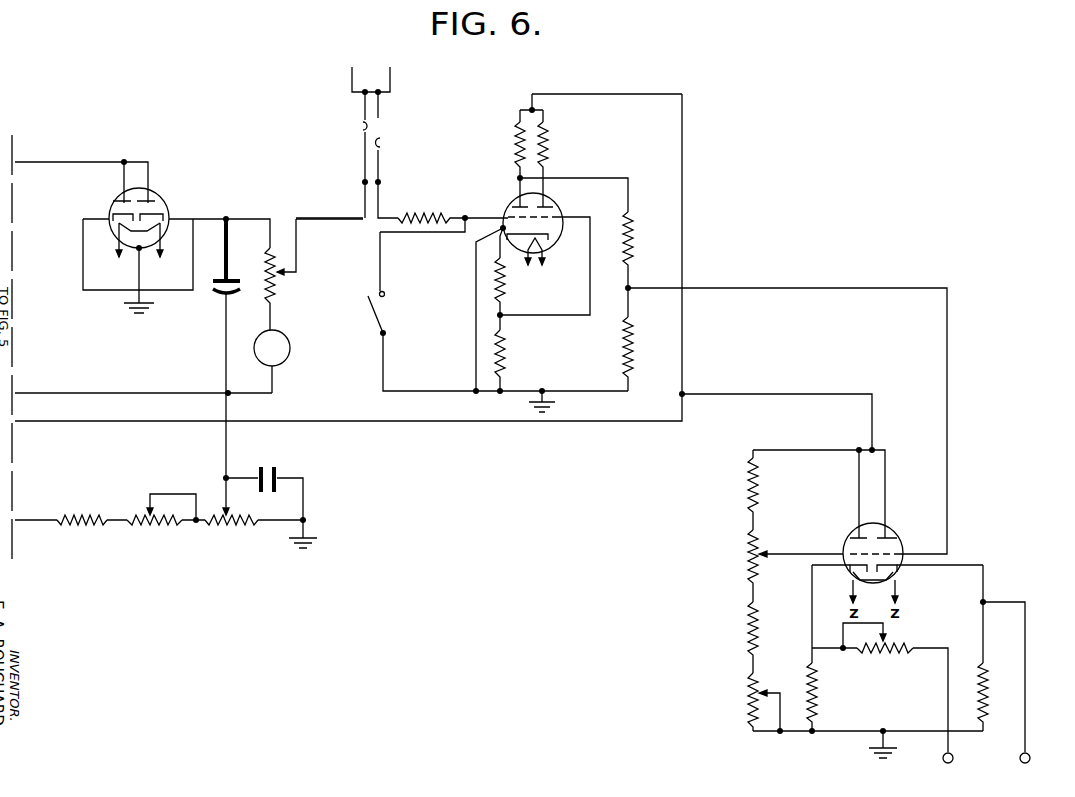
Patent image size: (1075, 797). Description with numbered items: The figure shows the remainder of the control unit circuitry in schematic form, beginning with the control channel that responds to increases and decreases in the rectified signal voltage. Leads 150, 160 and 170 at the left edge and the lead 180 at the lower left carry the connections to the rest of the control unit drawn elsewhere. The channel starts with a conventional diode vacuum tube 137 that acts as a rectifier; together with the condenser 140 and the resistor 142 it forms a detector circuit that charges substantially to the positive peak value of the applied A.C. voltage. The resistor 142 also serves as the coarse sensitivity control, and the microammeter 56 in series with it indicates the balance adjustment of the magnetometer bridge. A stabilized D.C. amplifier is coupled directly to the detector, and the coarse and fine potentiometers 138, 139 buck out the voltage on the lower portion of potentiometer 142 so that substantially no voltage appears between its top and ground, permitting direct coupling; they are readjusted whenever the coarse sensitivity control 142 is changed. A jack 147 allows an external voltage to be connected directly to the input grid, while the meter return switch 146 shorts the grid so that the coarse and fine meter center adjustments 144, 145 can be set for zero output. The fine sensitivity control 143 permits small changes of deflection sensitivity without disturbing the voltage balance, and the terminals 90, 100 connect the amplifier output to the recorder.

The lead to FIG. 5 150 is at (63, 162).
The diode vacuum tube 137 is at (165, 201).
The condenser 140 is at (230, 274).
The coarse sensitivity control 142 is at (281, 292).
The microammeter 56 is at (290, 352).
The lead to FIG. 5 160 is at (90, 393).
The lead to FIG. 5 170 is at (94, 412).
The resistor 180 is at (40, 520).
The potentiometer 139 is at (149, 525).
The potentiometer 138 is at (228, 525).
The jack 147 is at (383, 166).
The meter return switch 146 is at (385, 314).
The coarse meter center adjustment 144 is at (759, 547).
The fine meter center adjustment 145 is at (752, 701).
The fine sensitivity control 143 is at (879, 653).
The terminal 90 is at (945, 755).
The terminal 100 is at (1030, 756).